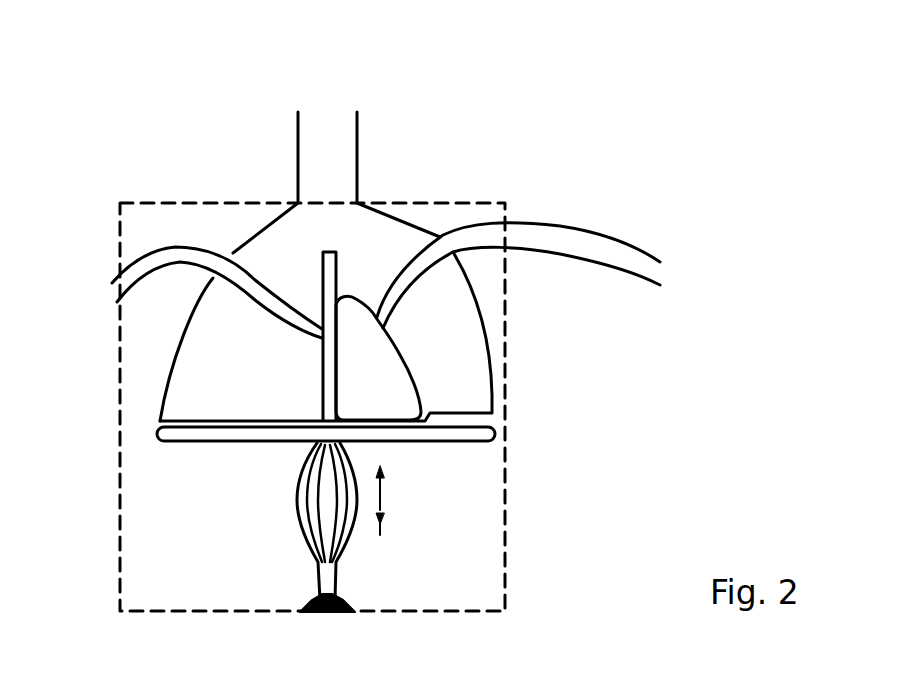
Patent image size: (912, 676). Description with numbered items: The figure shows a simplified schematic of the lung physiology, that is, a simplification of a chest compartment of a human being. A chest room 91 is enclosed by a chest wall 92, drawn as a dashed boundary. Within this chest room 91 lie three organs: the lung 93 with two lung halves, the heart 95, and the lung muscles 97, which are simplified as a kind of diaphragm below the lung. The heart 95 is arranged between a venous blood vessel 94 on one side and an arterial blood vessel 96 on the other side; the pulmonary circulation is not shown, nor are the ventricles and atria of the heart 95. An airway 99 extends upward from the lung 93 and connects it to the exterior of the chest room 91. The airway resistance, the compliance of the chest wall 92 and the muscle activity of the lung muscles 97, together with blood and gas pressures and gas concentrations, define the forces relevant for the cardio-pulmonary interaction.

The chest room 91 is at (485, 278).
The chest wall 92 is at (507, 442).
The lung 93 is at (465, 372).
The venous blood vessel 94 is at (167, 252).
The heart 95 is at (363, 375).
The arterial blood vessel 96 is at (542, 224).
The lung muscles 97 is at (307, 505).
The airway 99 is at (360, 153).